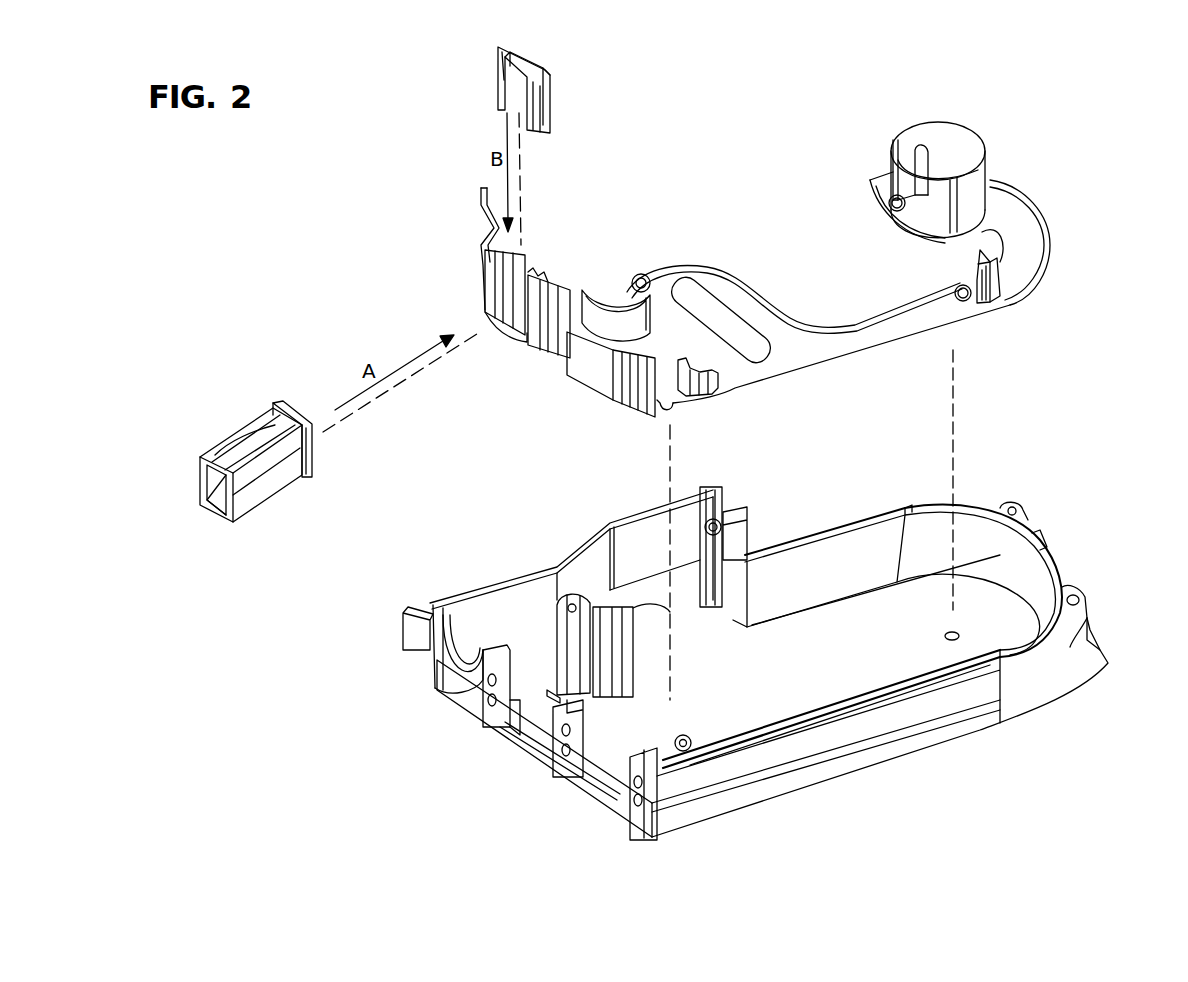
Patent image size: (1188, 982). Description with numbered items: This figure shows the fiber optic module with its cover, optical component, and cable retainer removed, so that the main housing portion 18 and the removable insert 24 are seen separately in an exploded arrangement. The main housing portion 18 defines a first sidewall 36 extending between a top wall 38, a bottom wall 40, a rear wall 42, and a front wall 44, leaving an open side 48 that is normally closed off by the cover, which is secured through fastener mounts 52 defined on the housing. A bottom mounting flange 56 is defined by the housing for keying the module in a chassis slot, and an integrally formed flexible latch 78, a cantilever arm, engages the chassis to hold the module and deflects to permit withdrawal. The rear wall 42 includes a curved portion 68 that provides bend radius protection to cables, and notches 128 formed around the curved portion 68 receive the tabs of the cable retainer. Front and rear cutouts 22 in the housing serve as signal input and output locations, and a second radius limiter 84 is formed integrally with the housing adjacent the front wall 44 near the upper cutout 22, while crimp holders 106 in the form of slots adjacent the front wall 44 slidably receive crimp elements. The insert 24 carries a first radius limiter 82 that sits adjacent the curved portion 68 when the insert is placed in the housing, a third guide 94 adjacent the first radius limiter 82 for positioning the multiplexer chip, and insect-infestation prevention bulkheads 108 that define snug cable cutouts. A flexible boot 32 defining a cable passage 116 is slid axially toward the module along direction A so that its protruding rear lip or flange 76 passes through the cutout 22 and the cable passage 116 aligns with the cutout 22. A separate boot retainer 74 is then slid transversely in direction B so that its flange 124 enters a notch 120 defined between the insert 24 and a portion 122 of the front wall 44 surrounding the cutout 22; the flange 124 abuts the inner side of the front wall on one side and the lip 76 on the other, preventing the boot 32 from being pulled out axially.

The main housing portion 18 is at (742, 650).
The cutouts 22 is at (722, 500).
The removable insert 24 is at (1048, 265).
The flexible boot 32 is at (248, 433).
The first sidewall 36 is at (862, 680).
The top wall 38 is at (608, 522).
The bottom wall 40 is at (742, 800).
The rear wall 42 is at (1062, 570).
The front wall 44 is at (565, 787).
The open side 48 is at (868, 565).
The fastener mounts 52 is at (686, 740).
The bottom mounting flange 56 is at (965, 712).
The curved portion 68 is at (1035, 535).
The boot retainer 74 is at (550, 105).
The rear lip or flange 76 is at (282, 405).
The flexible latch 78 is at (410, 610).
The first radius limiter 82 is at (985, 172).
The second radius limiter 84 is at (572, 600).
The third guide 94 is at (918, 165).
The crimp holders 106 is at (668, 610).
The bulkheads 108 is at (530, 270).
The cable passage 116 is at (215, 490).
The notch 120 is at (553, 695).
The portion of the front wall 122 is at (508, 722).
The flange 124 is at (505, 62).
The notches 128 is at (908, 508).